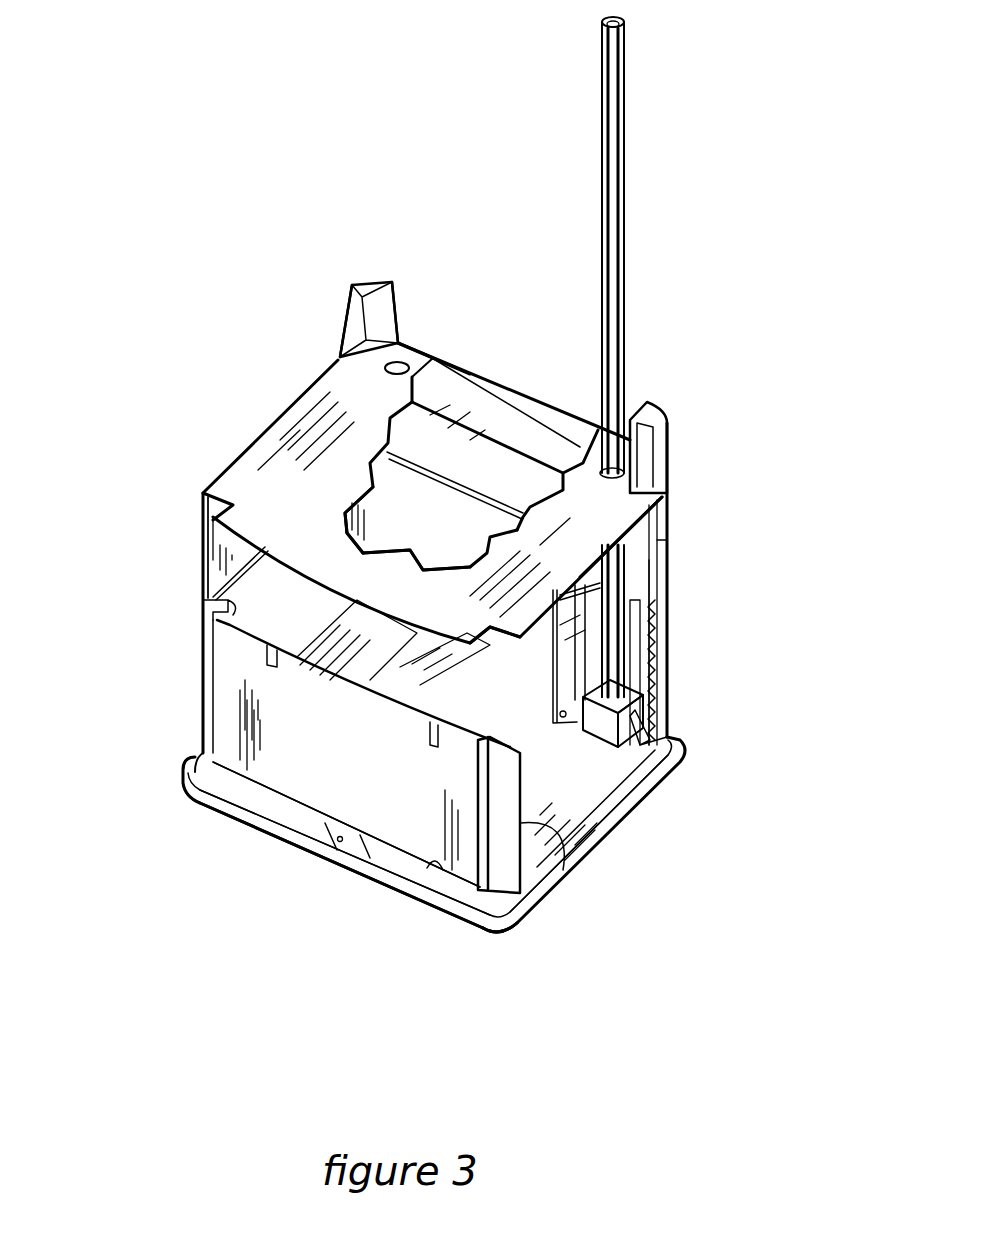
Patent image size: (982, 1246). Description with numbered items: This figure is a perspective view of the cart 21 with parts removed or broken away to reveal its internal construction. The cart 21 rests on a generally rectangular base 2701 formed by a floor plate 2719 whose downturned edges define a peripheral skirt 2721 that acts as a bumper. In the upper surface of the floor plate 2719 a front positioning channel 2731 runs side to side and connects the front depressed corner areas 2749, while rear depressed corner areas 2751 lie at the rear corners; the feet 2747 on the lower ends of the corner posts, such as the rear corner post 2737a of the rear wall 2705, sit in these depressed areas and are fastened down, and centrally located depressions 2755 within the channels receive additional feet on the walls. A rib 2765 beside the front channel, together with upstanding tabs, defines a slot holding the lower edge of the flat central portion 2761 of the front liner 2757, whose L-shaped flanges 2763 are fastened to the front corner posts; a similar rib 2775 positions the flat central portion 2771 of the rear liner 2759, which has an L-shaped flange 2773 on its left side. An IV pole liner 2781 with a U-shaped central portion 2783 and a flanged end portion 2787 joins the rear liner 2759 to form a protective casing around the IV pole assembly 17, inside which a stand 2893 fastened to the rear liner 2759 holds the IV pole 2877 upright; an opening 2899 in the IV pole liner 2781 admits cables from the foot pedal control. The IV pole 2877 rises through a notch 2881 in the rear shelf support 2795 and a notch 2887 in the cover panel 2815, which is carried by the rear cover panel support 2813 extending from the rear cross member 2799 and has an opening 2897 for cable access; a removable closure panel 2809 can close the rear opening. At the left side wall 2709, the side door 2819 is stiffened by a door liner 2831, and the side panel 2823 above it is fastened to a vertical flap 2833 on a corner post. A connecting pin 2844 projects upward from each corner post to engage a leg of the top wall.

The IV pole assembly 17 is at (640, 45).
The cart 21 is at (338, 337).
The base 2701 is at (182, 790).
The rear wall 2705 is at (477, 357).
The side wall 2709 is at (203, 518).
The floor plate 2719 is at (530, 872).
The peripheral skirt 2721 is at (477, 927).
The front positioning channel 2731 is at (380, 855).
The rear corner post 2737a is at (668, 583).
The feet 2747 is at (667, 713).
The front depressed corner areas 2749 is at (200, 752).
The rear depressed corner areas 2751 is at (648, 720).
The centrally located depressions 2755 is at (262, 840).
The front liner 2757 is at (323, 760).
The rear liner 2759 is at (397, 533).
The central portion 2761 is at (315, 800).
The L-shaped flanges 2763 is at (207, 617).
The rib 2765 is at (410, 907).
The central portion 2771 is at (474, 559).
The L-shaped flange 2773 is at (380, 493).
The rib 2775 is at (478, 647).
The IV pole liner 2781 is at (592, 625).
The U-shaped central portion 2783 is at (657, 657).
The flanged end portion 2787 is at (638, 623).
The rear shelf support 2795 is at (481, 514).
The rear cross member 2799 is at (530, 440).
The closure panel 2809 is at (528, 437).
The rear cover panel support 2813 is at (457, 378).
The cover panel 2815 is at (623, 514).
The side door 2819 is at (205, 660).
The side panel 2823 is at (203, 560).
The door liner 2831 is at (207, 598).
The vertical flap 2833 is at (668, 517).
The connecting pin 2844 is at (357, 277).
The IV pole 2877 is at (625, 170).
The notch 2881 is at (668, 547).
The notch 2887 is at (640, 393).
The stand 2893 is at (600, 722).
The opening 2897 is at (367, 500).
The opening 2899 is at (562, 720).